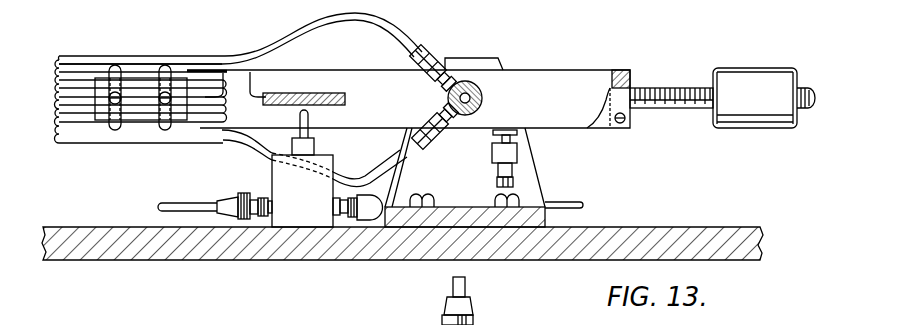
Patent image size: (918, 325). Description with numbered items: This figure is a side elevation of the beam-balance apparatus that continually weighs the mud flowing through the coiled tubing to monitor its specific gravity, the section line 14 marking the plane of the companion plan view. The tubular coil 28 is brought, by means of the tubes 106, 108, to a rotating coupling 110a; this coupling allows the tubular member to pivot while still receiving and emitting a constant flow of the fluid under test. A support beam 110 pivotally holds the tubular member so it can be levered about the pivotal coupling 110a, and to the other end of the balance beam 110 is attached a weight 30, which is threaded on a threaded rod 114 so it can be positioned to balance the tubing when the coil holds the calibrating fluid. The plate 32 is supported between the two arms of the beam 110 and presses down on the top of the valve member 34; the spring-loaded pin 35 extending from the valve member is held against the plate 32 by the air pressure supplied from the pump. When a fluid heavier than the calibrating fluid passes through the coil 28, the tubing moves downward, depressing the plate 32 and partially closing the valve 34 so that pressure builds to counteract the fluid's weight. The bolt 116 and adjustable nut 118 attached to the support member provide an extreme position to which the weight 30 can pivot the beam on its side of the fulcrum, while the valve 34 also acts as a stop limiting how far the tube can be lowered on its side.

The section line 14- 14 is at (47, 23).
The tubular coil 28 is at (182, 62).
The weight 30 is at (757, 117).
The plate 32 is at (343, 94).
The valve mechanism 34 is at (283, 169).
The spring-loaded pin 35 is at (310, 116).
The tube 106 is at (341, 20).
The tube 108 is at (353, 178).
The support beam 110 is at (598, 72).
The rotating coupling 110a is at (483, 97).
The threaded rod 114 is at (667, 108).
The bolt 116 is at (515, 137).
The adjustable nut 118 is at (517, 153).